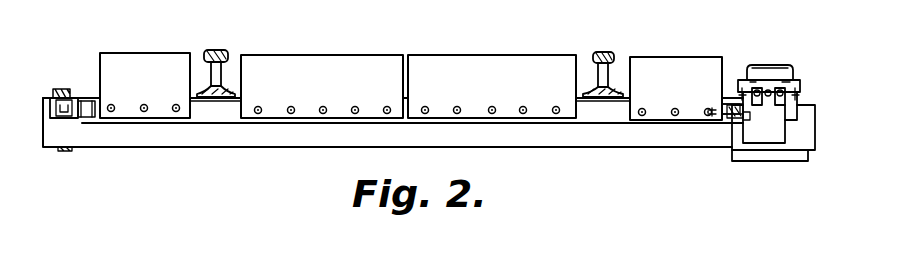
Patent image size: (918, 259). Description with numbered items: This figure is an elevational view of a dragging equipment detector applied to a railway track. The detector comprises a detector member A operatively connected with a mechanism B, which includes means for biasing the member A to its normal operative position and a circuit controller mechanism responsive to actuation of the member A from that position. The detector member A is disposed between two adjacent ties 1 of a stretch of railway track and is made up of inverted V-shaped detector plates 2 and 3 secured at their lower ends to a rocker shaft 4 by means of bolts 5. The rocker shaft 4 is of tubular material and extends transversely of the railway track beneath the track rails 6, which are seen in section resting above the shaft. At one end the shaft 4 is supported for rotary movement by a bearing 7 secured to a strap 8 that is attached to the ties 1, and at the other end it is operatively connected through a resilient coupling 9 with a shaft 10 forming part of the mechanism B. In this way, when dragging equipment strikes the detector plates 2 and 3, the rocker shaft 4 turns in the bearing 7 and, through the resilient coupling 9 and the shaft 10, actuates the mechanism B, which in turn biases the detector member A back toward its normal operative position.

The ties 1 is at (650, 140).
The detector plate 2 is at (303, 65).
The detector plate 3 is at (140, 63).
The rocker shaft 4 is at (220, 113).
The bolts 5 is at (174, 105).
The track rails 6 is at (218, 50).
The bearing 7 is at (64, 112).
The strap 8 is at (71, 88).
The resilient coupling 9 is at (722, 106).
The shaft 10 is at (744, 116).
The detector member A is at (384, 51).
The mechanism B is at (767, 62).